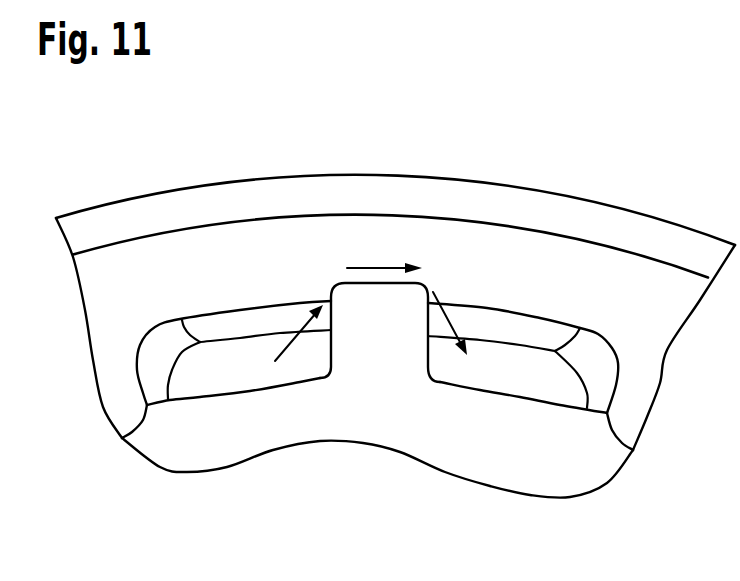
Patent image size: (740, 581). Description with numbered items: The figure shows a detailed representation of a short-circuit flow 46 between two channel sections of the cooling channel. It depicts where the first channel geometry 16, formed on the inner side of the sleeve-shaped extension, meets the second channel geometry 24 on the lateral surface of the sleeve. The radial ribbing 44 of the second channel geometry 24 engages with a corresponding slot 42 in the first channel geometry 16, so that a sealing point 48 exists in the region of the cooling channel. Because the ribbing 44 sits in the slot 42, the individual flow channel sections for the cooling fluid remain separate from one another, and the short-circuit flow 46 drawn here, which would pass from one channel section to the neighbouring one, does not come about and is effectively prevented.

The first channel geometry 16 is at (237, 260).
The second channel geometry 24 is at (365, 403).
The slot 42 is at (348, 282).
The radial ribbing 44 is at (352, 325).
The short-circuit flow 46 is at (385, 268).
The sealing point 48 is at (380, 283).